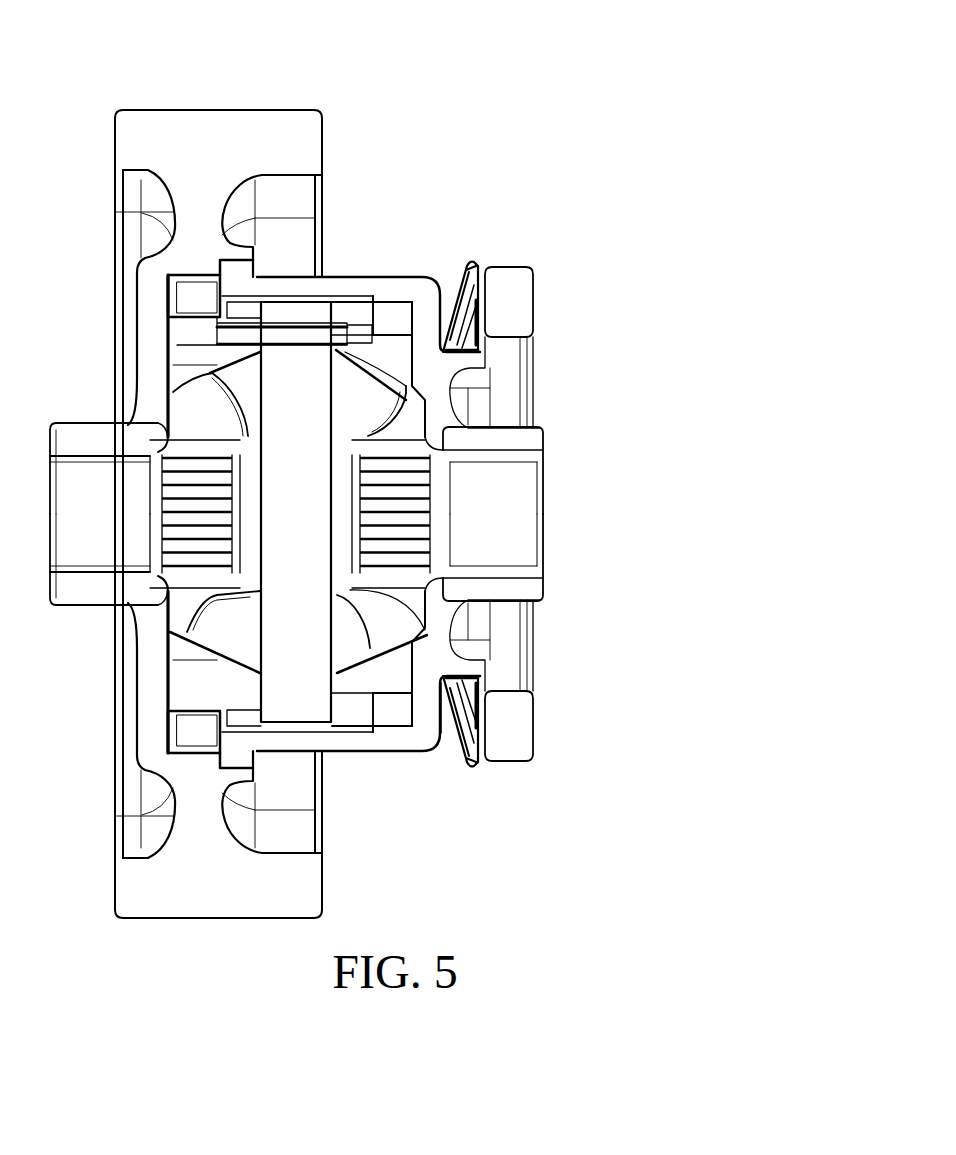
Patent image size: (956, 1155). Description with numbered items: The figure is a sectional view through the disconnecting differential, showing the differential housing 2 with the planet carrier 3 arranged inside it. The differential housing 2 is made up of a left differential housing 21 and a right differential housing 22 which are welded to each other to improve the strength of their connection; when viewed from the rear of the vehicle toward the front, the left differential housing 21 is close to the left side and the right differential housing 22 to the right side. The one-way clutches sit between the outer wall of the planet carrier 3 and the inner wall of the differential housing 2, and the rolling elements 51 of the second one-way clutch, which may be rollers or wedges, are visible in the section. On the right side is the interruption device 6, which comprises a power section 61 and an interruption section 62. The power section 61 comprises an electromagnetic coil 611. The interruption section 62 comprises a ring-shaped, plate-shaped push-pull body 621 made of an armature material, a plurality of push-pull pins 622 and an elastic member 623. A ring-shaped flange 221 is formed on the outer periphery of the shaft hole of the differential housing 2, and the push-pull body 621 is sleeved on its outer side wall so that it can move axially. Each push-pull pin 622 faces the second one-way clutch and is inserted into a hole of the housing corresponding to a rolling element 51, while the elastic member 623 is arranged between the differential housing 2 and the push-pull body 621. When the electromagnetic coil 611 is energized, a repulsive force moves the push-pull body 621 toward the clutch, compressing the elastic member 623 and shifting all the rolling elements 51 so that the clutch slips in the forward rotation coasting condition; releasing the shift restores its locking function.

The differential housing 2 is at (342, 53).
The left differential housing 21 is at (198, 163).
The right differential housing 22 is at (390, 277).
The ring-shaped flange 221 is at (480, 700).
The planet carrier 3 is at (370, 344).
The rolling element 51 is at (400, 313).
The interruption device 6 is at (703, 270).
The power section 61 is at (532, 277).
The electromagnetic coil 611 is at (518, 288).
The interruption section 62 is at (640, 312).
The push-pull body 621 is at (487, 317).
The push-pull pin 622 is at (488, 338).
The elastic member 623 is at (487, 294).